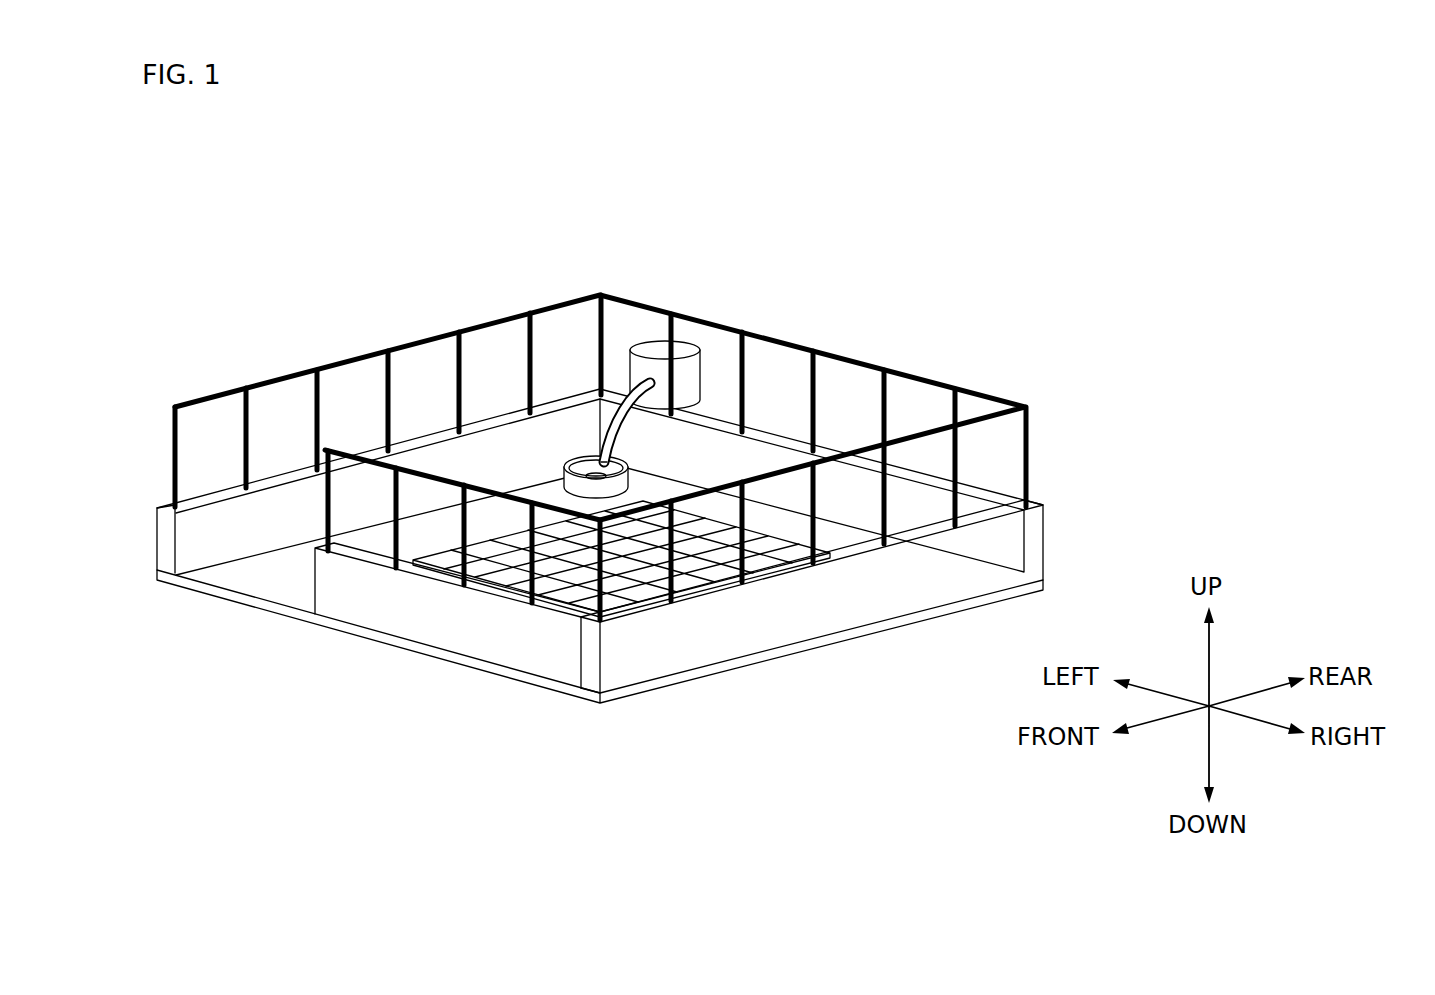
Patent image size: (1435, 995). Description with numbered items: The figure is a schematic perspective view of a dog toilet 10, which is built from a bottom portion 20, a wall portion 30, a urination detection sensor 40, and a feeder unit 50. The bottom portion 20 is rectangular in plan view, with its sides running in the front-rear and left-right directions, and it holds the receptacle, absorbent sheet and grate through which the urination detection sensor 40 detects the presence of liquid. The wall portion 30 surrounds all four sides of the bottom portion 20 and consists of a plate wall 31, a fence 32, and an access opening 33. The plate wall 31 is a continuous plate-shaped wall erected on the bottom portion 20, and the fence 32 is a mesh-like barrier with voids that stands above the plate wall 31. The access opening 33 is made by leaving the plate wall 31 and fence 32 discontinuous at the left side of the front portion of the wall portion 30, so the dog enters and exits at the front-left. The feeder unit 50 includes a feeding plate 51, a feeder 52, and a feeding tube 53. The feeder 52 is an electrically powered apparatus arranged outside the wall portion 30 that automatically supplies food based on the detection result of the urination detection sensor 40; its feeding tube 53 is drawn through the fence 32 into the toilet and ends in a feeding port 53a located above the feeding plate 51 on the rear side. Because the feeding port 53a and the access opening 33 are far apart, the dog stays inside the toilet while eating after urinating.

The dog toilet 10 is at (671, 440).
The bottom portion 20 is at (264, 608).
The wall portion 30 is at (671, 435).
The plate wall 31 is at (1046, 532).
The fence 32 is at (1028, 450).
The access opening 33 is at (250, 571).
The urination detection sensor 40 is at (662, 492).
The feeder unit 50 is at (617, 338).
The feeding plate 51 is at (583, 463).
The feeder 52 is at (647, 346).
The feeding tube 53 is at (644, 341).
The feeding port 53a is at (614, 456).